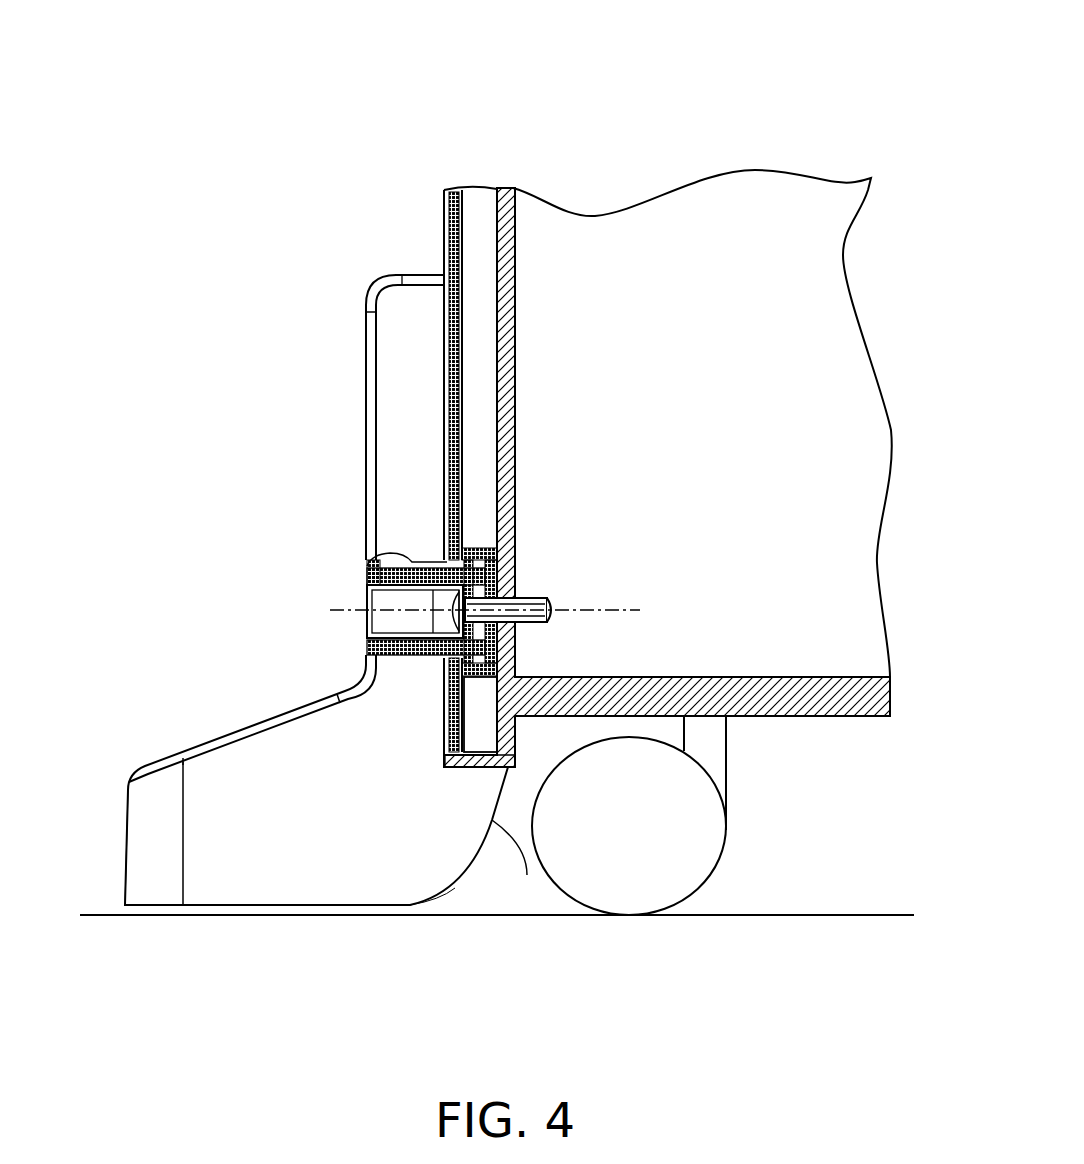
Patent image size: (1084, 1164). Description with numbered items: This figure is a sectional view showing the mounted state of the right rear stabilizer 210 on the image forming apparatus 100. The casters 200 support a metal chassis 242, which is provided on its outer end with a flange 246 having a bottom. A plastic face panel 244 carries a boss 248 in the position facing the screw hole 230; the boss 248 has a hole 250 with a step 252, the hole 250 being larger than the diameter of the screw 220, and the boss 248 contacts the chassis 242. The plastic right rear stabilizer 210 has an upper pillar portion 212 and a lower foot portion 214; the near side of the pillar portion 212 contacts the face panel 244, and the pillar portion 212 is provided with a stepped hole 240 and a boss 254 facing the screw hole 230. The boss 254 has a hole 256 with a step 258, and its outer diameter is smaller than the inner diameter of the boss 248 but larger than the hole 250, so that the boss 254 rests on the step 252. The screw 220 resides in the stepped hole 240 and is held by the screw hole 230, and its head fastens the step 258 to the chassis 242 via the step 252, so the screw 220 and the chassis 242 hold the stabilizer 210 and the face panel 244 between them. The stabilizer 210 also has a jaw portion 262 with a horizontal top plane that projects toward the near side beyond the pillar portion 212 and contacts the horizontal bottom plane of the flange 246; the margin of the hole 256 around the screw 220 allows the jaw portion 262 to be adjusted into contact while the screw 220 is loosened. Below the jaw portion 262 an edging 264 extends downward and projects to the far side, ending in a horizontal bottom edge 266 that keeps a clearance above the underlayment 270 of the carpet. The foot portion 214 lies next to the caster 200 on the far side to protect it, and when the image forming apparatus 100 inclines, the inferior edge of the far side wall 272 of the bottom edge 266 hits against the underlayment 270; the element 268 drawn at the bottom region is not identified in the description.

The image forming apparatus 100 is at (573, 414).
The caster 200 is at (700, 848).
The right rear stabilizer 210 is at (322, 638).
The pillar portion 212 is at (366, 383).
The foot portion 214 is at (267, 720).
The screw 220 is at (533, 627).
The screw hole 230 is at (515, 588).
The stepped hole 240 is at (383, 596).
The chassis 242 is at (515, 325).
The face panel 244 is at (445, 245).
The flange 246 is at (517, 752).
The boss 248 is at (478, 677).
The hole 250 is at (515, 556).
The step 252 is at (447, 557).
The boss 254 is at (413, 563).
The hole 256 is at (366, 647).
The step 258 is at (368, 573).
The jaw portion 262 is at (508, 767).
The edging 264 is at (527, 875).
The bottom edge 266 is at (278, 905).
The contact edge 268 is at (440, 890).
The underlayment 270 is at (743, 916).
The far side wall 272 is at (115, 905).